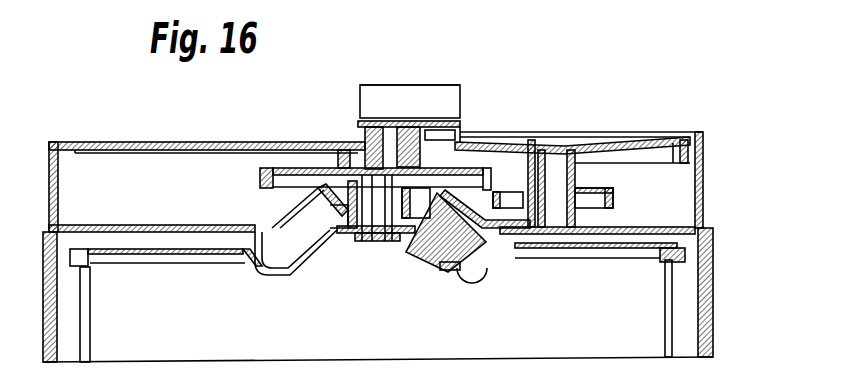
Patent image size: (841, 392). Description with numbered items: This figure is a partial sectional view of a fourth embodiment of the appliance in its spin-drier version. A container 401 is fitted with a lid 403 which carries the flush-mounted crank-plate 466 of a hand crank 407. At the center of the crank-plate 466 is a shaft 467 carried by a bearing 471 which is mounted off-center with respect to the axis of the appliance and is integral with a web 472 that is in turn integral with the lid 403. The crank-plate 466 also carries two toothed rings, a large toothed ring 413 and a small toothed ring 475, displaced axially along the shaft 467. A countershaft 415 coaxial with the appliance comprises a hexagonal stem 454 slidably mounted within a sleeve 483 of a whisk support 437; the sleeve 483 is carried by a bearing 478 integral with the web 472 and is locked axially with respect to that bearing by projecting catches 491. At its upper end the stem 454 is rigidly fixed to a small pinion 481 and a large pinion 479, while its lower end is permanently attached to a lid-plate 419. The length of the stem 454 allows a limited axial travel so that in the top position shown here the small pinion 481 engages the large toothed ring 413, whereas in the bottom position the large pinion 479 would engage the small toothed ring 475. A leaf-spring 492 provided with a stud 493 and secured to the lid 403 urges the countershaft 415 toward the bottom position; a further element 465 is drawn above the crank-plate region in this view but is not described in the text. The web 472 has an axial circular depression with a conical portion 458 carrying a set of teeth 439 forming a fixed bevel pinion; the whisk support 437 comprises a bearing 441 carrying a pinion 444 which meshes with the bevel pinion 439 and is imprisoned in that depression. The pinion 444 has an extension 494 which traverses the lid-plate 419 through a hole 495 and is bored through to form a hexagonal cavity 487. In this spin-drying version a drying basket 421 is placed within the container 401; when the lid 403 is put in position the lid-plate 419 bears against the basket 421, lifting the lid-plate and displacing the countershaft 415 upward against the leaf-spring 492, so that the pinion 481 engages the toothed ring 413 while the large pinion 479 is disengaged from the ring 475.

The container 401 is at (716, 308).
The lid 403 is at (706, 207).
The hand crank 407 is at (577, 130).
The large toothed ring 413 is at (700, 150).
The countershaft 415 is at (300, 166).
The lid-plate 419 is at (150, 256).
The drying basket 421 is at (92, 328).
The whisk support 437 is at (260, 268).
The set of teeth (fixed bevel pinion) 439 is at (315, 212).
The bearing 441 is at (492, 258).
The pinion 444 is at (522, 262).
The hexagonal stem 454 is at (378, 243).
The conical portion 458 is at (337, 231).
The actuator block 465 is at (445, 100).
The crank-plate 466 is at (612, 142).
The shaft 467 is at (533, 145).
The bearing 471 is at (560, 255).
The web 472 is at (638, 221).
The small toothed ring 475 is at (612, 200).
The bearing 478 is at (330, 168).
The large pinion 479 is at (262, 178).
The small pinion 481 is at (362, 140).
The sleeve 483 is at (366, 243).
The hexagonal cavity 487 is at (438, 266).
The projecting catches 491 is at (390, 150).
The leaf-spring 492 is at (150, 141).
The stud 493 is at (410, 92).
The extension 494 is at (450, 272).
The hole 495 is at (480, 284).